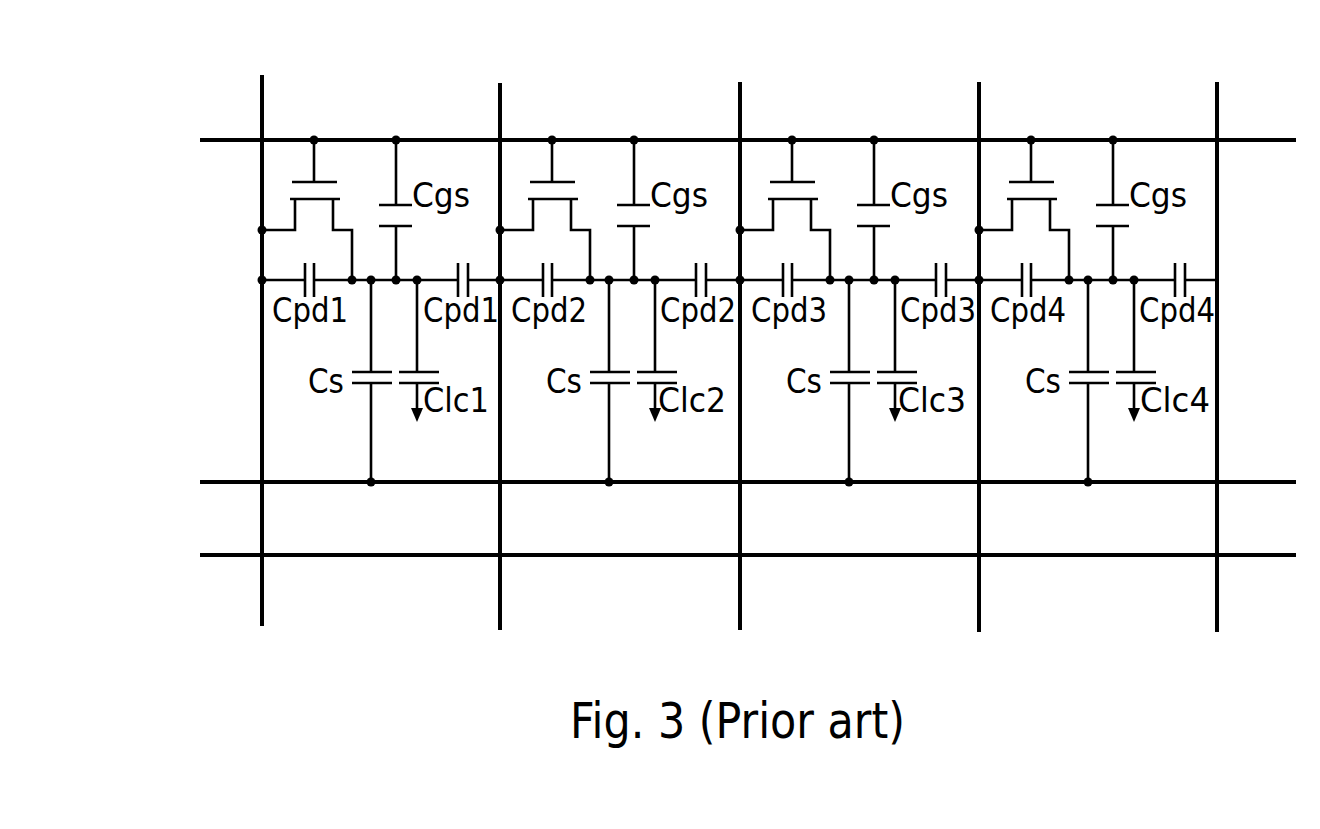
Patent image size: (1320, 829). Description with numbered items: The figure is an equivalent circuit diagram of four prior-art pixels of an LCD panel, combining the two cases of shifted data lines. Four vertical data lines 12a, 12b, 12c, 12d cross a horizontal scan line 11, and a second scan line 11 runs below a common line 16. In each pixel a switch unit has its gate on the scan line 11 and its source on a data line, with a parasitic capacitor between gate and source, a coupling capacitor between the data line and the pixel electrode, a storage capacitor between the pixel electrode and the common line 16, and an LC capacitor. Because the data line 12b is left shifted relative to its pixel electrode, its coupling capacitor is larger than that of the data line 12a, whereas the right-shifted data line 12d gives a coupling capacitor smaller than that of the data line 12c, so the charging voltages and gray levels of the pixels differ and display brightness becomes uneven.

The scan line 11 is at (724, 347).
The common line 16 is at (727, 482).
The data line 12a is at (283, 327).
The data line 12b is at (495, 329).
The data line 12c is at (738, 329).
The data line 12d is at (983, 330).